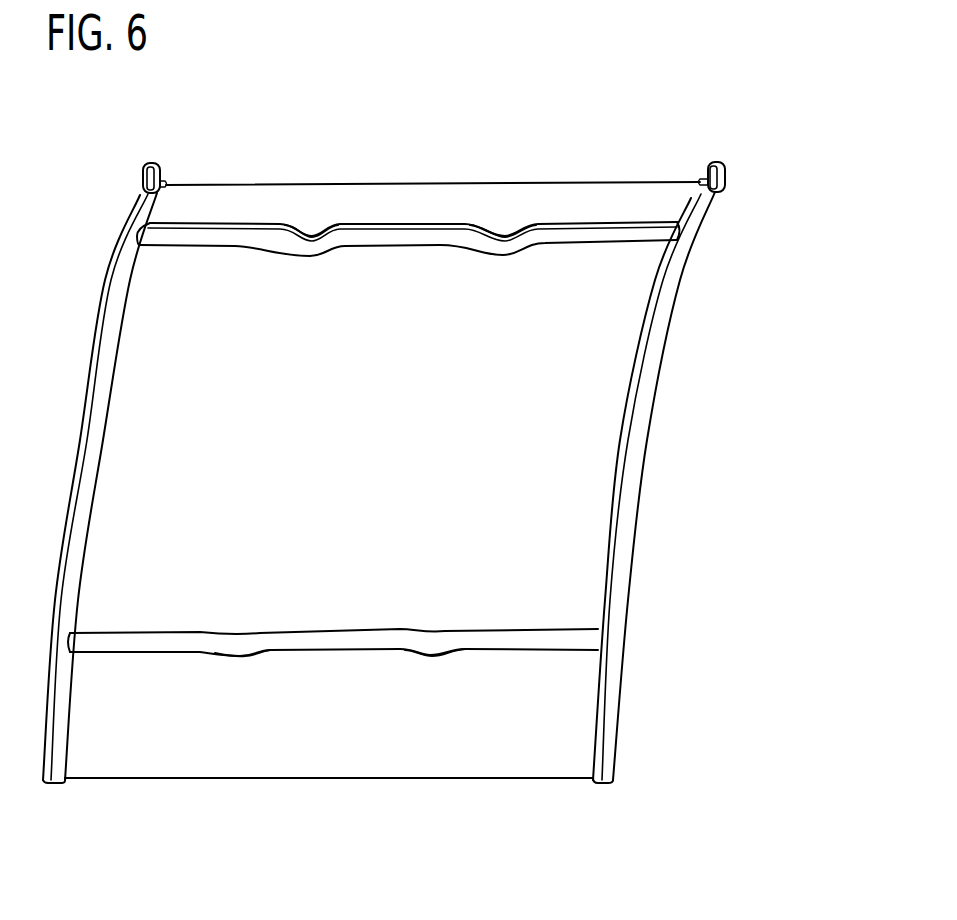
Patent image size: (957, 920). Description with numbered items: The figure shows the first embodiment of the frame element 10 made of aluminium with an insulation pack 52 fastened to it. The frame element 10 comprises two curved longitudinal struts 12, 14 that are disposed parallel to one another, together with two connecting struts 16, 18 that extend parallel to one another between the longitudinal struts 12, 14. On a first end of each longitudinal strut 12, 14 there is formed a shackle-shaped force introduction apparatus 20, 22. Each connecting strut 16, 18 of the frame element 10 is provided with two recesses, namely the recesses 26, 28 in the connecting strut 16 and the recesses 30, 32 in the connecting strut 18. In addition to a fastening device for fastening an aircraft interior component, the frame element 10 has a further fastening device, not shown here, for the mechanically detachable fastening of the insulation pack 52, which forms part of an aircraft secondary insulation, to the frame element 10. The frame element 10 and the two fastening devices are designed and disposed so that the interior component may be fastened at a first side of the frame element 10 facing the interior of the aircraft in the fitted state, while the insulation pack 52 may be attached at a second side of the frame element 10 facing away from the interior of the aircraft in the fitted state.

The frame element 10 is at (718, 364).
The longitudinal strut 12 is at (120, 273).
The longitudinal strut 14 is at (690, 212).
The connecting strut 16 is at (218, 240).
The connecting strut 18 is at (150, 637).
The force introduction apparatus 20 is at (152, 163).
The force introduction apparatus 22 is at (718, 162).
The recess 26 is at (312, 248).
The recess 28 is at (505, 250).
The recess 30 is at (245, 648).
The recess 32 is at (437, 648).
The insulation pack 52 is at (560, 505).